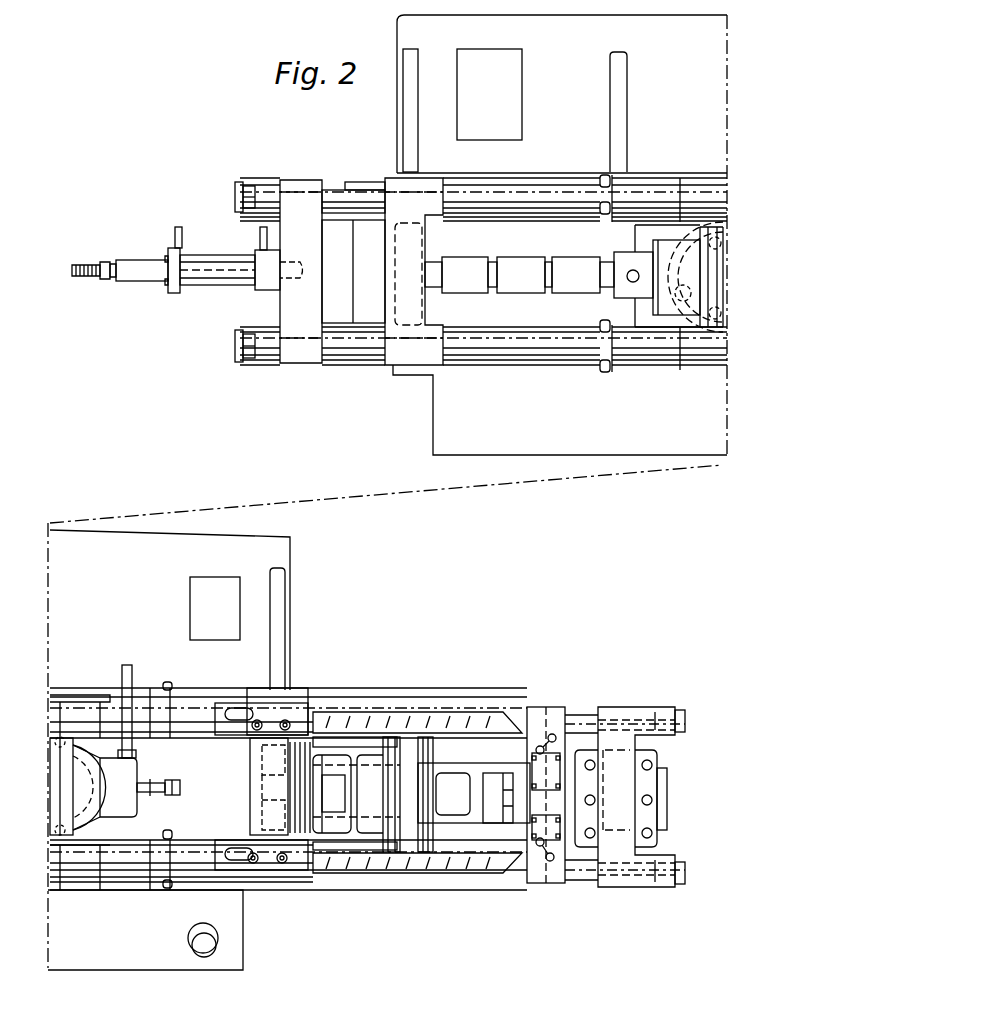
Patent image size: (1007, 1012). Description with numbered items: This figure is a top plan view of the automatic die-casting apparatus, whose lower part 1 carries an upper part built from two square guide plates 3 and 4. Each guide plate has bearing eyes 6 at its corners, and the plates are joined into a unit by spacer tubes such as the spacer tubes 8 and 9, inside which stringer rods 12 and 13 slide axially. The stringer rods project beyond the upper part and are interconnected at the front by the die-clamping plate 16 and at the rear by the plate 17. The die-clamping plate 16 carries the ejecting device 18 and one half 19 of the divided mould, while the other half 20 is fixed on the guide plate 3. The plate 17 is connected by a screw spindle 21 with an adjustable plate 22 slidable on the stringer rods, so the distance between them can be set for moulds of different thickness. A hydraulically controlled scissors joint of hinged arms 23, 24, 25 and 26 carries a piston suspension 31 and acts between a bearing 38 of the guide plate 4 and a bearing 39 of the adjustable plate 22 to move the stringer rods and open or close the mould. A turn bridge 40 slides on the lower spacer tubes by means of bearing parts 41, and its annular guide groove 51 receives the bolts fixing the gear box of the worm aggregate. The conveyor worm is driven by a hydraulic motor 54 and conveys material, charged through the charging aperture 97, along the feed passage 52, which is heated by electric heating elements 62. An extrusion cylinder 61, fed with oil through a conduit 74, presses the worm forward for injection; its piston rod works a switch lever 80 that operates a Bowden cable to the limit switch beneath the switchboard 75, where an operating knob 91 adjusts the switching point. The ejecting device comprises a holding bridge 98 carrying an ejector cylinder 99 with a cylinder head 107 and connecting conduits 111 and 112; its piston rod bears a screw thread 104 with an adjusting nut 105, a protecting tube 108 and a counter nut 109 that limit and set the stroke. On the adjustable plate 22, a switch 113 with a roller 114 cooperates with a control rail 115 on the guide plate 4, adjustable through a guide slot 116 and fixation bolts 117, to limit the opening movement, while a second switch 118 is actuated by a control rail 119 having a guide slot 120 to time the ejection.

The lower part 1 is at (397, 372).
The square guide plate 3 is at (390, 303).
The square guide plate 4 is at (252, 750).
The bearing eyes 6 is at (392, 180).
The spacer tube 8 is at (465, 363).
The spacer tube 9 is at (543, 185).
The stringer rod 12 is at (337, 360).
The stringer rod 13 is at (337, 197).
The die-clamping plate 16 is at (292, 222).
The plate 17 is at (613, 738).
The ejecting device 18 is at (212, 282).
The half of the divided die-casting mould 19 is at (333, 292).
The half of the divided die-casting mould 20 is at (368, 233).
The screw spindle 21 is at (667, 788).
The adjustable plate 22 is at (562, 743).
The hinged arm 23 is at (342, 750).
The hinged arm 24 is at (450, 765).
The hinged arm 25 is at (322, 820).
The hinged arm 26 is at (493, 813).
The piston suspension 31 is at (400, 793).
The bearing 38 is at (298, 788).
The bearing 39 is at (503, 800).
The turn bridge 40 is at (122, 823).
The bearing part 41 is at (648, 178).
The annular guide groove 51 is at (118, 767).
The feed passage 52 is at (548, 258).
The hydraulic motor 54 is at (102, 698).
The extrusion cylinder 61 is at (118, 782).
The electric heating elements 62 is at (475, 260).
The conduit 74 is at (130, 676).
The switchboard 75 is at (240, 955).
The switch lever 80 is at (178, 792).
The operating knob 91 is at (218, 940).
The charging aperture 97 is at (630, 272).
The holding bridge 98 is at (262, 293).
The ejector cylinder 99 is at (214, 265).
The screw thread 104 is at (77, 262).
The adjusting nut 105 is at (111, 280).
The cylinder head 107 is at (178, 288).
The protecting tube 108 is at (143, 282).
The counter nut 109 is at (103, 260).
The connecting conduit 111 is at (175, 235).
The connecting conduit 112 is at (260, 235).
The switch 113 is at (543, 760).
The roller 114 is at (550, 733).
The control rail 115 is at (383, 720).
The guide slot 116 is at (318, 723).
The fixation bolts 117 is at (270, 700).
The second switch 118 is at (552, 863).
The control rail 119 is at (372, 867).
The guide slot 120 is at (270, 867).